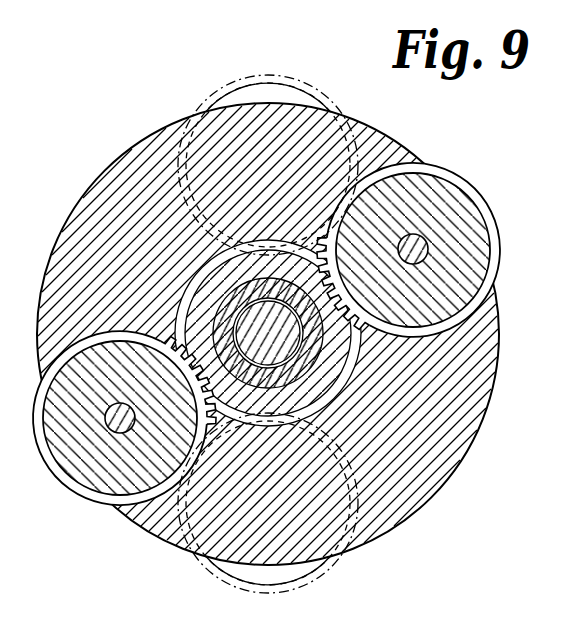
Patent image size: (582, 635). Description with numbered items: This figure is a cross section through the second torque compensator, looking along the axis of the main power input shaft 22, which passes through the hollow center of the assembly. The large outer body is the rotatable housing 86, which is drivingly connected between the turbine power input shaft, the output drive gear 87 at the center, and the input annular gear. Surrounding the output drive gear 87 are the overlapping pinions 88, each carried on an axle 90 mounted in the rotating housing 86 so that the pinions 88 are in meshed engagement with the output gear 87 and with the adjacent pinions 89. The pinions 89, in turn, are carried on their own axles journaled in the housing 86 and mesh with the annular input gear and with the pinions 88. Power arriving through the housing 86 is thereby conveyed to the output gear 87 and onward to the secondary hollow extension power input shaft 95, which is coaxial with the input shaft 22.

The input shaft 22 is at (258, 316).
The rotatable housing 86 is at (482, 408).
The output drive gear 87 is at (317, 386).
The pinions 88 is at (462, 195).
The pinions 89 is at (277, 90).
The axles 90 is at (422, 248).
The secondary hollow extension power input shaft 95 is at (308, 348).